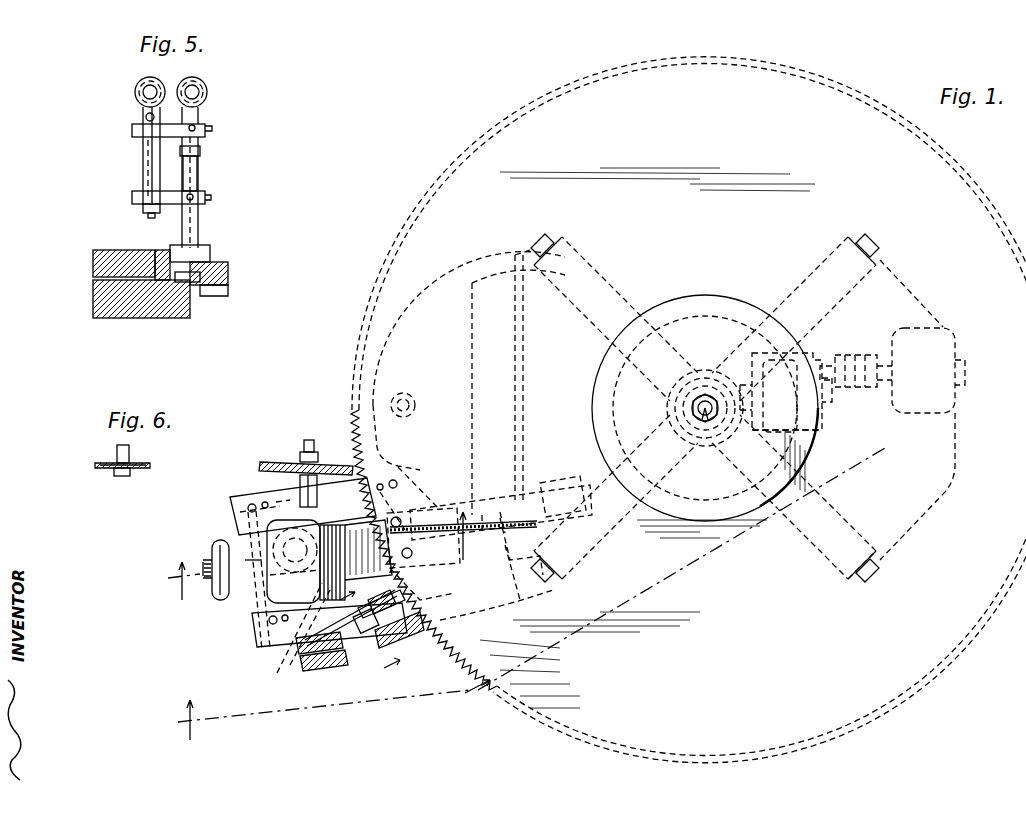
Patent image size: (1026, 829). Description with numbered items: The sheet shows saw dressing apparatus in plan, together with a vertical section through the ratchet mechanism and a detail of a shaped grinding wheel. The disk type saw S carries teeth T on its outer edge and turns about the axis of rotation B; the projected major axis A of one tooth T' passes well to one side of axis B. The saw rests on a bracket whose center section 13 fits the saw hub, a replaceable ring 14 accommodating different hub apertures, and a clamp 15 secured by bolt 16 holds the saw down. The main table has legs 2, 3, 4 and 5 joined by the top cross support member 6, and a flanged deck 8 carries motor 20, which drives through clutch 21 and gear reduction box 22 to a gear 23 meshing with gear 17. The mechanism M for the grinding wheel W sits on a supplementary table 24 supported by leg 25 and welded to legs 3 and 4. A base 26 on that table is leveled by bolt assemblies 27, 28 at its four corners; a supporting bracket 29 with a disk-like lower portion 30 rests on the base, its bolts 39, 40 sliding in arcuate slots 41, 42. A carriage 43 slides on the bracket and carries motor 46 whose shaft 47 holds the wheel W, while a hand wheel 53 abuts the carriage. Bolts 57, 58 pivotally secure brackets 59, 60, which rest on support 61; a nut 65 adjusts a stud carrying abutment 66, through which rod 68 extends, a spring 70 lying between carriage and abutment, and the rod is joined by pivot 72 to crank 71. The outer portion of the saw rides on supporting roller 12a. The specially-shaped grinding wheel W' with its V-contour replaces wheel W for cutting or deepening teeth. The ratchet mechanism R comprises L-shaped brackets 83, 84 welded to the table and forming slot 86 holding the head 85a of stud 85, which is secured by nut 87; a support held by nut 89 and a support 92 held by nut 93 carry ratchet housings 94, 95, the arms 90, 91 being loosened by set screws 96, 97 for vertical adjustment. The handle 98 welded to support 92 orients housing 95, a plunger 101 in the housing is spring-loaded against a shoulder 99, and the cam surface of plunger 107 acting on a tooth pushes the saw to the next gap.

In FIG. 5, the ratchet housing 95 is at (134, 92).
In FIG. 5, the ratchet housing 94 is at (208, 92).
In FIG. 5, the support 92 is at (143, 167).
In FIG. 5, the handle 98 is at (146, 117).
In FIG. 6, the handle 98 is at (340, 664).
In FIG. 5, the shoulder 99 is at (200, 116).
In FIG. 5, the arm 91 is at (132, 132).
In FIG. 5, the set screw 96 is at (196, 129).
In FIG. 5, the stud 85 is at (200, 220).
In FIG. 5, the nut 89 is at (200, 150).
In FIG. 5, the arm 90 is at (132, 198).
In FIG. 5, the set screw 97 is at (194, 197).
In FIG. 5, the nut 93 is at (143, 210).
In FIG. 5, the nut 87 is at (210, 250).
In FIG. 5, the L-shaped bracket 83 is at (166, 244).
In FIG. 6, the L-shaped bracket 83 is at (310, 654).
In FIG. 5, the base 26 is at (93, 264).
In FIG. 6, the base 26 is at (238, 508).
In FIG. 5, the L-shaped bracket 84 is at (228, 272).
In FIG. 6, the L-shaped bracket 84 is at (330, 668).
In FIG. 5, the head 85a is at (196, 282).
In FIG. 5, the slot 86 is at (214, 296).
In FIG. 5, the supplementary table 24 is at (138, 308).
In FIG. 6, the supplementary table 24 is at (233, 497).
In FIG. 1, the supplementary table 24 is at (397, 320).
In FIG. 6, the specially-shaped grinding wheel W' is at (91, 455).
In FIG. 6, the grinding wheel W is at (306, 452).
In FIG. 6, the shaft 47 is at (312, 440).
In FIG. 6, the arcuate slot 42 is at (300, 487).
In FIG. 6, the bolts 28 is at (250, 640).
In FIG. 1, the bolts 28 is at (382, 484).
In FIG. 6, the bolts 27 is at (250, 628).
In FIG. 1, the bolts 27 is at (396, 482).
In FIG. 6, the lower portion 30 is at (280, 501).
In FIG. 6, the supporting bracket 29 is at (248, 526).
In FIG. 6, the leg 25 is at (285, 535).
In FIG. 6, the bolt 40 is at (318, 508).
In FIG. 6, the carriage 43 is at (212, 548).
In FIG. 6, the hand wheel 53 is at (212, 552).
In FIG. 6, the motor 46 is at (255, 584).
In FIG. 6, the mechanism M is at (230, 586).
In FIG. 6, the leg 3 is at (184, 586).
In FIG. 1, the leg 3 is at (555, 585).
In FIG. 6, the leg 2 is at (324, 722).
In FIG. 1, the leg 2 is at (860, 585).
In FIG. 6, the arcuate slot 41 is at (286, 630).
In FIG. 6, the bolt 39 is at (329, 641).
In FIG. 6, the plunger 107 is at (370, 598).
In FIG. 6, the plunger 101 is at (400, 640).
In FIG. 6, the leg 5 is at (330, 606).
In FIG. 1, the leg 5 is at (862, 240).
In FIG. 6, the ratchet mechanisms R is at (373, 640).
In FIG. 1, the disk type saw S is at (478, 151).
In FIG. 1, the teeth T is at (403, 537).
In FIG. 1, the tooth T' is at (477, 711).
In FIG. 1, the clamp 15 is at (722, 296).
In FIG. 1, the center section 13 is at (693, 408).
In FIG. 1, the replaceable ring 14 is at (686, 382).
In FIG. 1, the gear 17 is at (678, 440).
In FIG. 1, the bolt 16 is at (705, 405).
In FIG. 1, the axis of rotation B is at (705, 412).
In FIG. 1, the gear 23 is at (738, 360).
In FIG. 1, the gear reduction box 22 is at (795, 440).
In FIG. 1, the clutch 21 is at (862, 355).
In FIG. 1, the motor 20 is at (945, 328).
In FIG. 1, the mounting bracket 8 is at (957, 455).
In FIG. 1, the top cross support member 6 is at (830, 510).
In FIG. 1, the leg 4 is at (560, 240).
In FIG. 1, the projected axis A is at (690, 567).
In FIG. 1, the support 61 is at (523, 367).
In FIG. 1, the supporting roller 12a is at (410, 395).
In FIG. 1, the bolt 57 is at (412, 512).
In FIG. 1, the rod 68 is at (401, 518).
In FIG. 1, the spring 70 is at (412, 553).
In FIG. 1, the abutment 66 is at (465, 520).
In FIG. 1, the bracket 59 is at (470, 505).
In FIG. 1, the pivot 72 is at (483, 514).
In FIG. 1, the crank 71 is at (503, 510).
In FIG. 1, the nut 65 is at (568, 470).
In FIG. 1, the bolt 58 is at (440, 578).
In FIG. 1, the bracket 60 is at (515, 570).